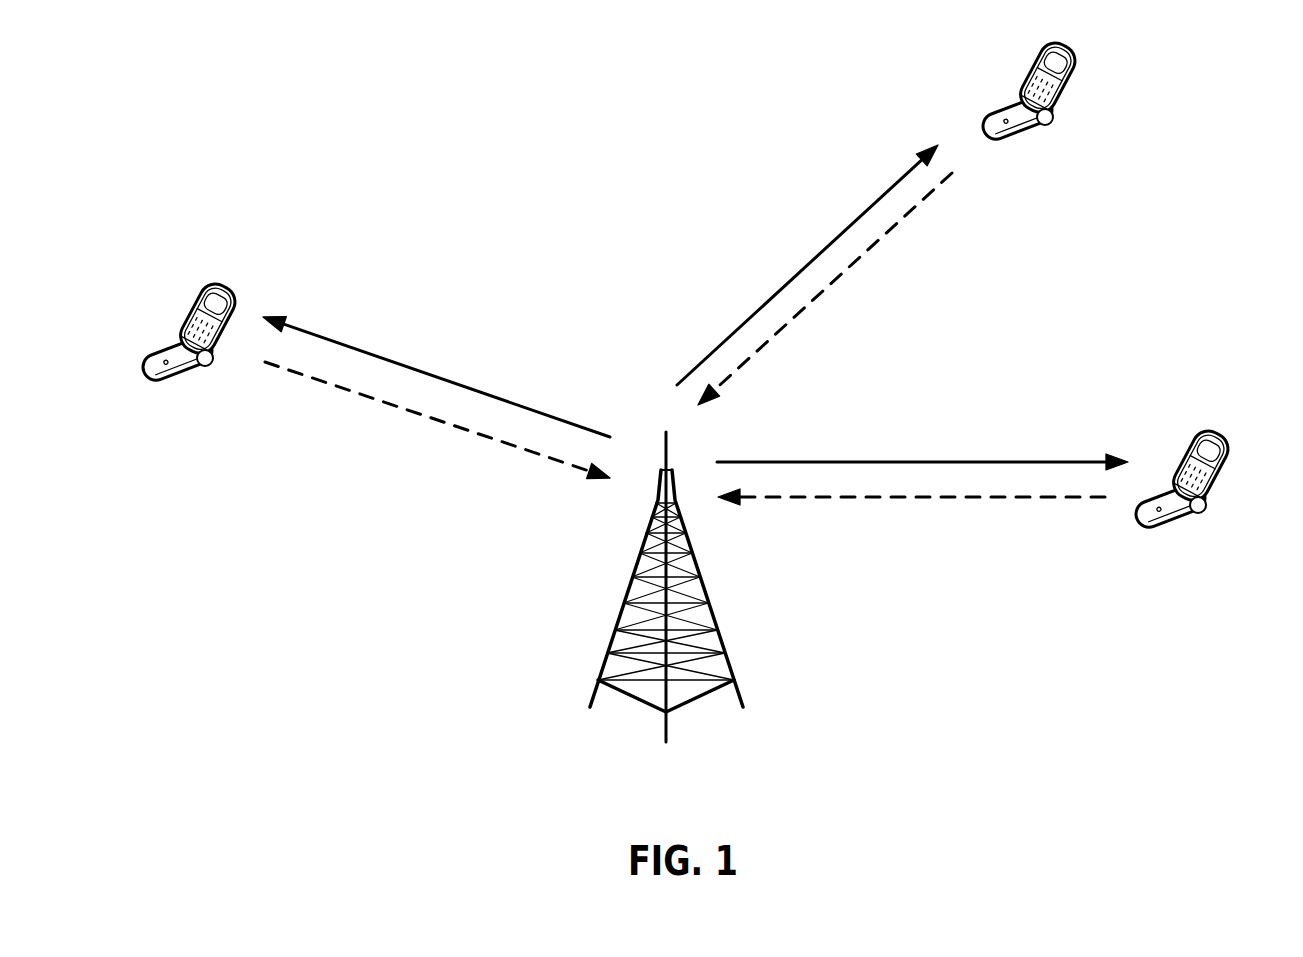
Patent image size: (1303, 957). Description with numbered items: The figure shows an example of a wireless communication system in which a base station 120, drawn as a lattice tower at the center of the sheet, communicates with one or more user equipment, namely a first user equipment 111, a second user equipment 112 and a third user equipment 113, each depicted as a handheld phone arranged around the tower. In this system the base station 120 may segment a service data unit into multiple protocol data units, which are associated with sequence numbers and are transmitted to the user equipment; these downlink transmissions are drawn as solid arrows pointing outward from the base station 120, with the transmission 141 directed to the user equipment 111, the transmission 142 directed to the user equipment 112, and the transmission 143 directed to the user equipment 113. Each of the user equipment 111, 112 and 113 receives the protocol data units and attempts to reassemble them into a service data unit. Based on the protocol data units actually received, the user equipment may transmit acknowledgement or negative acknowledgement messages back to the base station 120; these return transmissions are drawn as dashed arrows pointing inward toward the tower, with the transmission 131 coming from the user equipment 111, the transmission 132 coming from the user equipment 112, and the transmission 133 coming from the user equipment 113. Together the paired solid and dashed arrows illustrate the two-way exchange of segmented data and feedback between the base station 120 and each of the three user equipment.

The user equipment 111 is at (200, 377).
The user equipment 112 is at (1193, 524).
The user equipment 113 is at (1040, 136).
The base station 120 is at (725, 660).
The transmission of acknowledgement messages 131 is at (477, 432).
The transmission of acknowledgement messages 132 is at (882, 498).
The transmission of acknowledgement messages 133 is at (850, 263).
The transmission of protocol data units 141 is at (372, 353).
The transmission of protocol data units 142 is at (1030, 458).
The transmission of protocol data units 143 is at (857, 217).